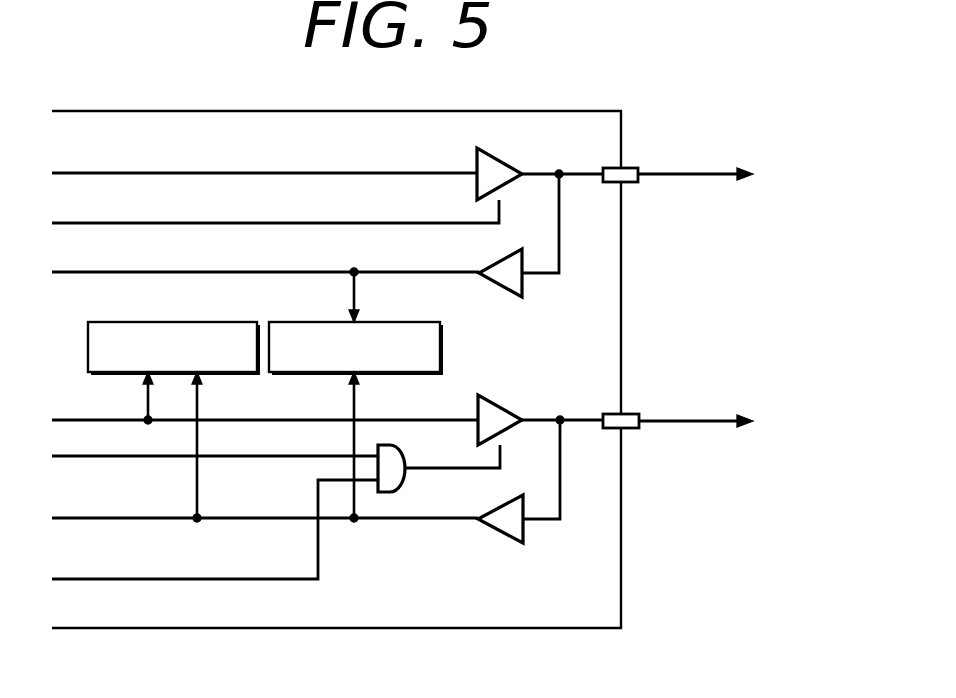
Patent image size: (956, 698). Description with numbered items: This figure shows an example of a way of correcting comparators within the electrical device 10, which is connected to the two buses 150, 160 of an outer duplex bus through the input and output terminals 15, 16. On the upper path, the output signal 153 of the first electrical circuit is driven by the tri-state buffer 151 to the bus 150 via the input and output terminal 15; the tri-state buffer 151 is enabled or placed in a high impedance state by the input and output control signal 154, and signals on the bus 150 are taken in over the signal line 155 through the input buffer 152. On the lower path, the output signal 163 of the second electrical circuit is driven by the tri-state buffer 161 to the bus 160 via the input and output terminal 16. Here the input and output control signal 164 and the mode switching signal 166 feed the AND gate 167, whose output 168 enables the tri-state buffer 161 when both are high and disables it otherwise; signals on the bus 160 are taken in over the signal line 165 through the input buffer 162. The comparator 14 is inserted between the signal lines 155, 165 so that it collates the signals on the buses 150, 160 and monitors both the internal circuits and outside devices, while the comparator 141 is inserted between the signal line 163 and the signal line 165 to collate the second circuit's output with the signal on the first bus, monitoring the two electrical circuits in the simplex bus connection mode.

The electrical device 10 is at (588, 111).
The comparator 14 is at (415, 322).
The comparator 141 is at (232, 322).
The input and output terminal 15 is at (630, 168).
The input and output terminal 16 is at (633, 414).
The bus 150 is at (703, 174).
The bus 160 is at (698, 421).
The tri-state buffer 151 is at (497, 161).
The input buffer 152 is at (491, 291).
The tri-state buffer 161 is at (498, 406).
The input buffer 162 is at (491, 535).
The output signal 153 is at (105, 173).
The input and output control signal 154 is at (105, 223).
The signal line 155 is at (105, 272).
The output signal 163 is at (105, 420).
The input and output control signal 164 is at (105, 456).
The signal line 165 is at (105, 518).
The mode switching signal 166 is at (105, 579).
The AND gate 167 is at (403, 453).
The output of AND gate 168 is at (504, 452).